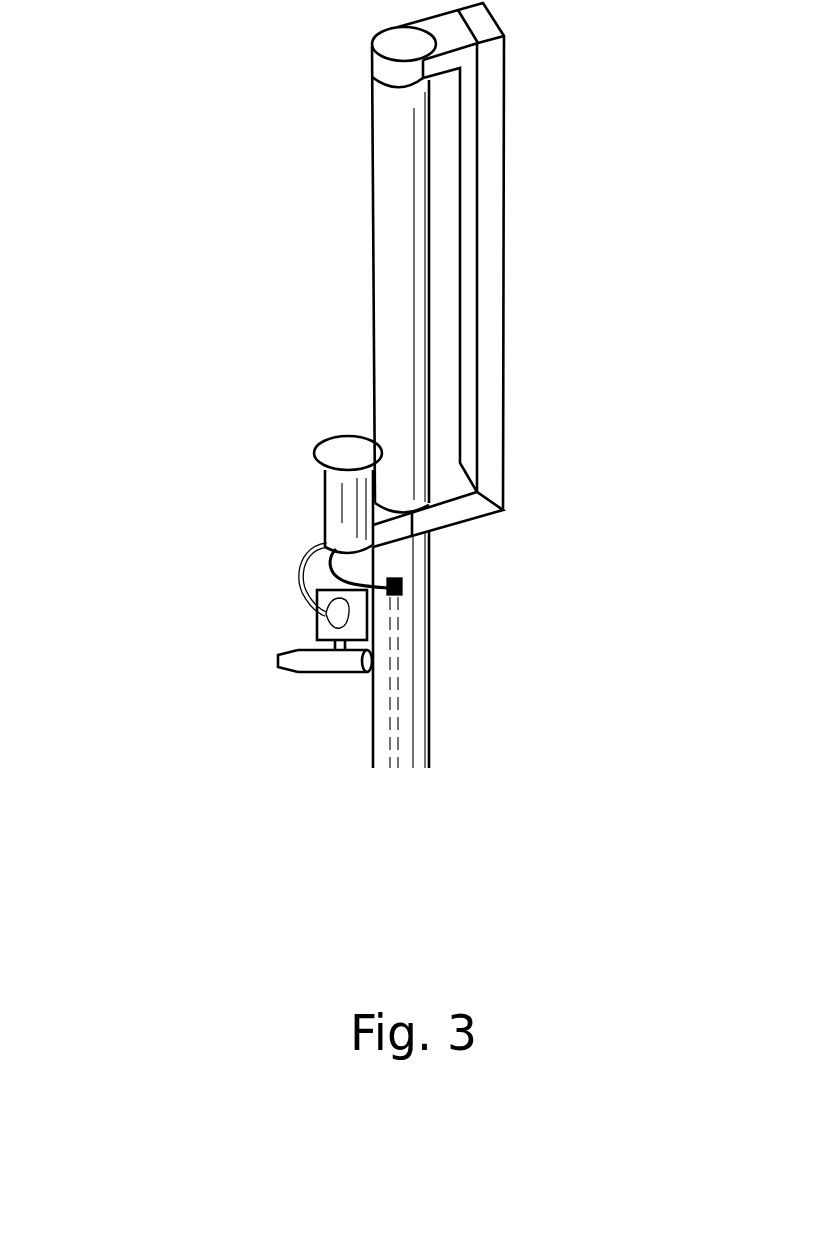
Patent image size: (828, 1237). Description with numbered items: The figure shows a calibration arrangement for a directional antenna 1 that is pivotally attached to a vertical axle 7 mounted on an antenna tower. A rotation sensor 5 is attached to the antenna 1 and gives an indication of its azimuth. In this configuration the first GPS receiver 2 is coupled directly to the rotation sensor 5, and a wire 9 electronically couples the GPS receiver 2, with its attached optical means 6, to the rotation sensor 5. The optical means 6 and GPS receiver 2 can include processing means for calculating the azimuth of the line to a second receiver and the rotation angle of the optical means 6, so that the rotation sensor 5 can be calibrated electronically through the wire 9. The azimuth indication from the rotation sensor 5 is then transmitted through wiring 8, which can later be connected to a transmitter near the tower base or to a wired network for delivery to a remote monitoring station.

The directional antenna 1 is at (485, 275).
The vertical axle 7 is at (346, 397).
The rotation sensor 5 is at (279, 494).
The wire 9 is at (237, 585).
The wiring 8 is at (282, 658).
The first GPS receiver 2 is at (249, 646).
The optical means 6 is at (319, 711).